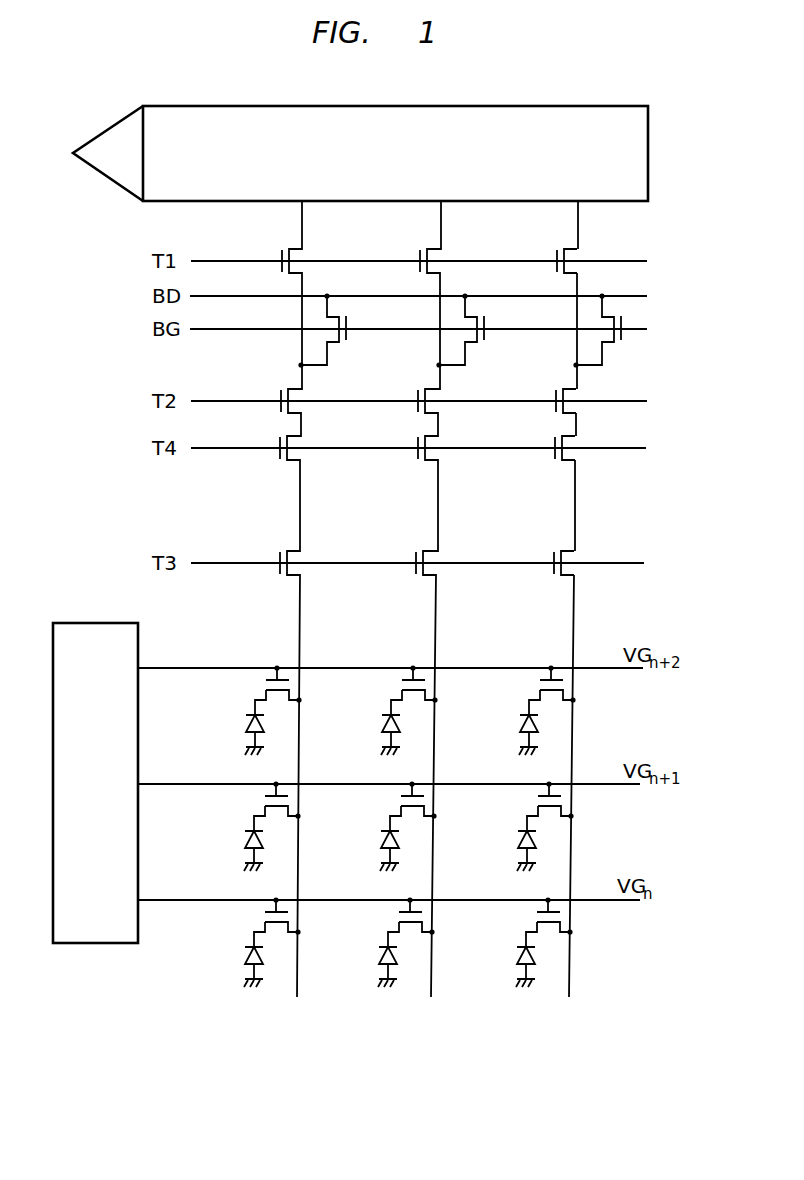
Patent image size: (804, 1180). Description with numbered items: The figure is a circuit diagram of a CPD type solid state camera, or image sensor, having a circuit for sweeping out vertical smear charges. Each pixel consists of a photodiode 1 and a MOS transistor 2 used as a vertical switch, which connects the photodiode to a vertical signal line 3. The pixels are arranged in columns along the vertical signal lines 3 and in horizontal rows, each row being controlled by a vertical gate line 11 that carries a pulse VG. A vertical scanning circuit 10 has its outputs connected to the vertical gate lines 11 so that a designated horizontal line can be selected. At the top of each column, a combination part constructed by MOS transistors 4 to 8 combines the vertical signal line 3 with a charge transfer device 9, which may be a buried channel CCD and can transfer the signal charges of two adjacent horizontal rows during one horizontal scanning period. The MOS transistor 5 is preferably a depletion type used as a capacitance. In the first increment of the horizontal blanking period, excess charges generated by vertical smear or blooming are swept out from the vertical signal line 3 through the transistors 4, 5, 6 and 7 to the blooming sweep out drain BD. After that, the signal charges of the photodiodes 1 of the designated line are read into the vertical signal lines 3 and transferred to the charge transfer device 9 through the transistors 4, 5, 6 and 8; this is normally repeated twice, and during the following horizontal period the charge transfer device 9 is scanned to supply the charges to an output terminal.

The photodiode 1 is at (515, 961).
The MOS transistor used as a vertical switch 2 is at (551, 933).
The vertical signal line 3 is at (570, 962).
The MOS transistor 4 is at (580, 576).
The MOS transistor 5 is at (580, 453).
The MOS transistor 6 is at (580, 408).
The MOS transistor 7 is at (608, 346).
The MOS transistor 8 is at (585, 256).
The charge transfer device 9 is at (648, 158).
The vertical scanning circuit 10 is at (97, 622).
The vertical gate line 11 is at (185, 902).